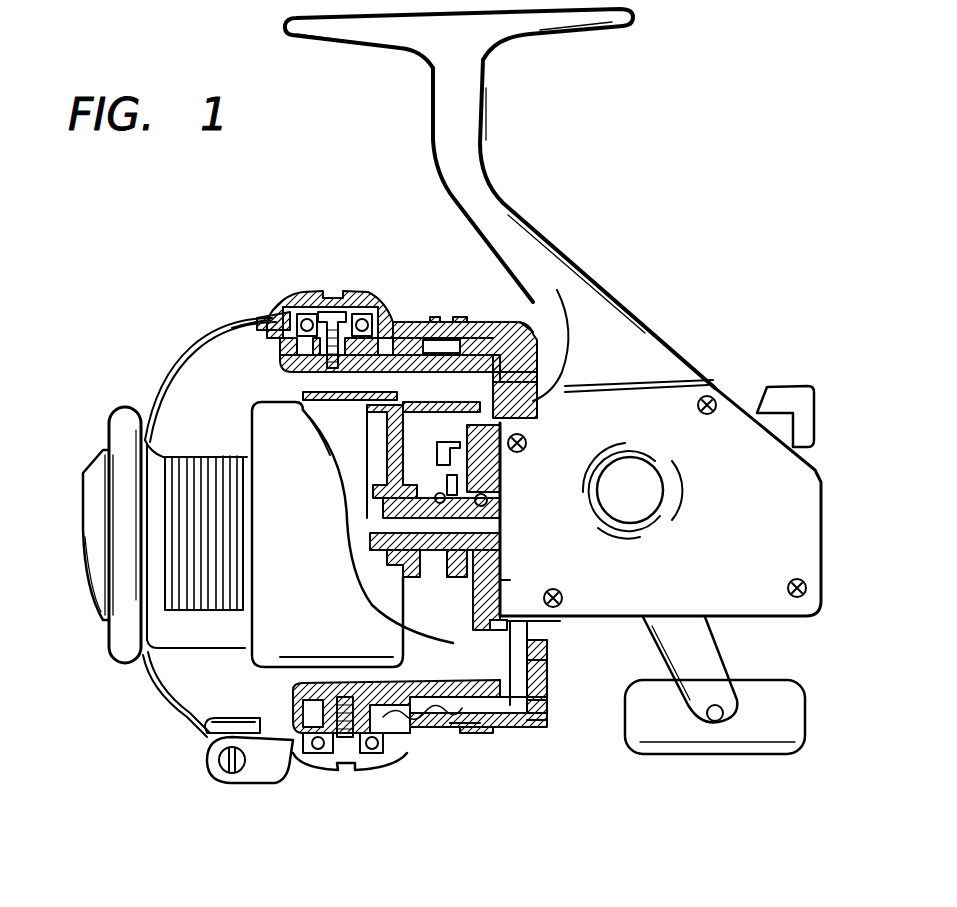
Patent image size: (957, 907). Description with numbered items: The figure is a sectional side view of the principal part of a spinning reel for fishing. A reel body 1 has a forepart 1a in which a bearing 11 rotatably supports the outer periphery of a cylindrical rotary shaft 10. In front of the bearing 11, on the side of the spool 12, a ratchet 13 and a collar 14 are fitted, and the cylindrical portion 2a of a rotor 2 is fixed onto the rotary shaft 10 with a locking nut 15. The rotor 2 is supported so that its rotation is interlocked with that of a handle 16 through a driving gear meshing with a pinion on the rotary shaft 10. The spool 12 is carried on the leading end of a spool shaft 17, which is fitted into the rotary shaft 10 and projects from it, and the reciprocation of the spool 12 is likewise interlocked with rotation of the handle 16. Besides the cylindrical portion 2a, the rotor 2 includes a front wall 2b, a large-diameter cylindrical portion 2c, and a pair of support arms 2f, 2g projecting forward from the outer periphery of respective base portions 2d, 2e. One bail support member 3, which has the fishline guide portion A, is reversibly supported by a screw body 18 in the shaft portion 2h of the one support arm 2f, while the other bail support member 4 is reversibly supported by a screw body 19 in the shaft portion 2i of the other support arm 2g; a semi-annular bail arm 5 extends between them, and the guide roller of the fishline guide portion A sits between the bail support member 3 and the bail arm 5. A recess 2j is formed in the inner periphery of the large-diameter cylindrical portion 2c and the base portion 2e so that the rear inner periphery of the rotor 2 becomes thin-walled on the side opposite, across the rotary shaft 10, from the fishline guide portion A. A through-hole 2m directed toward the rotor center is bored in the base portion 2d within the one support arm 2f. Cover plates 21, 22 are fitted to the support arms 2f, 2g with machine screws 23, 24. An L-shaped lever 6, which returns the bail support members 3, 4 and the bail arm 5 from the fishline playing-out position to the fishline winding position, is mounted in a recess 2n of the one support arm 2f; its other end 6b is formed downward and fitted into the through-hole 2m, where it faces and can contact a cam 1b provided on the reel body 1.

The reel body 1 is at (724, 388).
The forepart 1a is at (500, 577).
The cam 1b is at (530, 647).
The rotor 2 is at (539, 329).
The cylindrical portion 2a is at (378, 300).
The front wall 2b is at (380, 437).
The large-diameter cylindrical portion 2c is at (367, 753).
The base portion 2d is at (540, 697).
The base portion 2e is at (470, 405).
The support arm 2f is at (300, 700).
The support arm 2g is at (295, 370).
The shaft portion 2h is at (227, 712).
The shaft portion 2i is at (215, 330).
The recess 2j is at (540, 425).
The through-hole 2m is at (543, 687).
The recess 2n is at (543, 703).
The bail support member 3 is at (207, 773).
The bail support member 4 is at (283, 308).
The bail arm 5 is at (225, 325).
The L-shaped lever 6 is at (513, 730).
The other end 6b is at (520, 630).
The rotary shaft 10 is at (362, 525).
The bearing 11 is at (477, 425).
The spool 12 is at (120, 405).
The ratchet 13 is at (430, 705).
The collar 14 is at (420, 515).
The locking nut 15 is at (370, 553).
The handle 16 is at (707, 650).
The spool shaft 17 is at (372, 540).
The screw body 18 is at (317, 767).
The screw body 19 is at (295, 314).
The cover plate 21 is at (497, 733).
The cover plate 22 is at (495, 322).
The machine screw 23 is at (460, 730).
The machine screw 24 is at (453, 322).
The fishline guide portion A is at (196, 749).